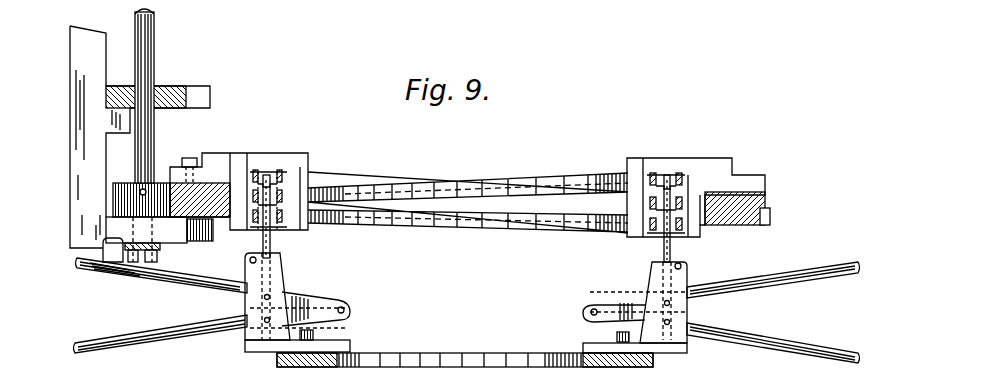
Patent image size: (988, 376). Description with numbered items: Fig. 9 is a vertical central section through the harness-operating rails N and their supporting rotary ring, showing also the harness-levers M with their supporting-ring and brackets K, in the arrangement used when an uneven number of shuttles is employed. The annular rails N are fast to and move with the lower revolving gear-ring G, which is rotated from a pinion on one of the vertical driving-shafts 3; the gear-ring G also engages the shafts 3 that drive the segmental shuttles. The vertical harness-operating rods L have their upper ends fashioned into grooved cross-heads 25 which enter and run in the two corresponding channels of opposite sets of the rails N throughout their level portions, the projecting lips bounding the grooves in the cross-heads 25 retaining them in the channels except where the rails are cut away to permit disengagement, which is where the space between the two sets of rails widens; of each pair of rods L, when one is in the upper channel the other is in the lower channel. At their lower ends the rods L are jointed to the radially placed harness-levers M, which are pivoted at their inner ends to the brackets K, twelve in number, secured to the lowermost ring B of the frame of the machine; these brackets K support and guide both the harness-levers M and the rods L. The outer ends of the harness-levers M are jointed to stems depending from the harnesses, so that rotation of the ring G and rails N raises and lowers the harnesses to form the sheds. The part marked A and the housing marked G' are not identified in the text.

The post or standard A is at (150, 144).
The driving-shaft 3 is at (156, 131).
The housing G' is at (467, 185).
The lower revolving gear-ring G is at (746, 208).
The harness-operating rails N is at (400, 167).
The grooved cross-head 25 is at (256, 186).
The harness-operating rod L is at (263, 248).
The bracket K is at (340, 310).
The harness-lever M is at (196, 323).
The ring of the frame B is at (445, 349).